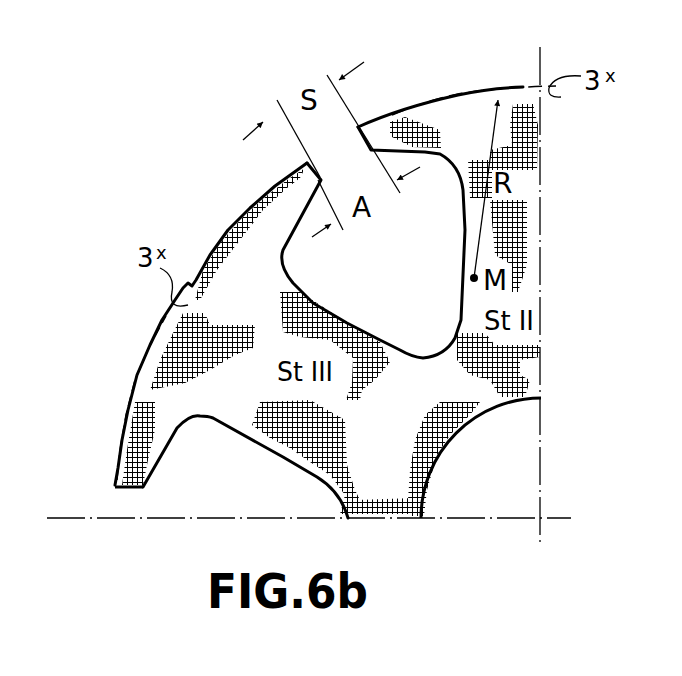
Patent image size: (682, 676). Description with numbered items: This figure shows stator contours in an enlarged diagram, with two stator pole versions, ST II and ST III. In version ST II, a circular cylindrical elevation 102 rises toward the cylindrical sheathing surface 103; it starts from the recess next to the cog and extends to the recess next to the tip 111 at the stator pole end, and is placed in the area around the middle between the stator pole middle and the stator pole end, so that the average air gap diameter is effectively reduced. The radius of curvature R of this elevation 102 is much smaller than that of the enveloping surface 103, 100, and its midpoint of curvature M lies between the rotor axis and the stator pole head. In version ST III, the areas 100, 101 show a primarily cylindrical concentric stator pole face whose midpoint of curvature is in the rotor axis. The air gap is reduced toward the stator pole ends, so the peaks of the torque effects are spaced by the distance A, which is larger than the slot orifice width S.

The enveloping surface 100 is at (150, 360).
The stator pole face area 101 is at (143, 396).
The circular cylindrical elevation 102 is at (423, 108).
The cylindrical sheathing surface 103 is at (476, 92).
The tip 111 is at (115, 485).